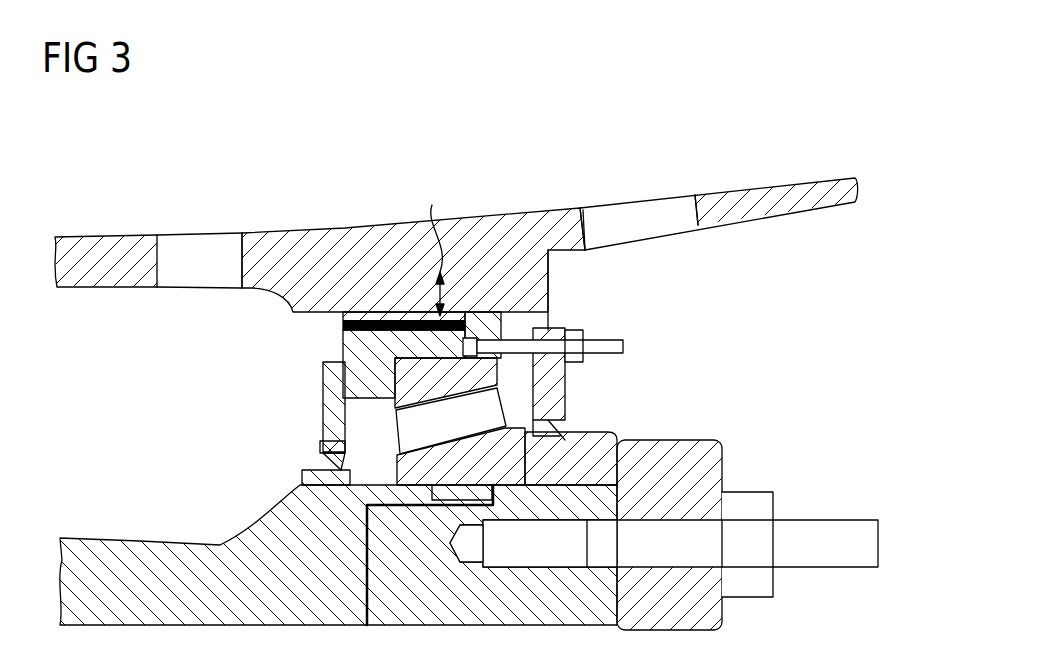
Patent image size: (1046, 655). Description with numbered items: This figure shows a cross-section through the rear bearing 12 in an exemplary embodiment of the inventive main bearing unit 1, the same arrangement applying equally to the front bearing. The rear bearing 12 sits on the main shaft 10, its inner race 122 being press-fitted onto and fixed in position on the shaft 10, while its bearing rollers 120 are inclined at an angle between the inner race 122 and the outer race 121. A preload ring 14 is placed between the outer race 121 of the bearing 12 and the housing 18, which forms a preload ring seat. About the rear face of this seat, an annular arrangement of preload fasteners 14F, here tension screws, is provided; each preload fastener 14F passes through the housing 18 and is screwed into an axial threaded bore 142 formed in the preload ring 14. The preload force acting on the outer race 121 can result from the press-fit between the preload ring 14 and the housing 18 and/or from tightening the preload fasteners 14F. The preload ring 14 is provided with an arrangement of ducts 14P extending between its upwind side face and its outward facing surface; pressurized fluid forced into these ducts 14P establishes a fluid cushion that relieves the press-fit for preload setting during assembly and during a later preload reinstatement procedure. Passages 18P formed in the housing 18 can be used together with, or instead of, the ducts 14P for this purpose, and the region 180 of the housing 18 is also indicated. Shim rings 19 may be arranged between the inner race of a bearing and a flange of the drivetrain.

The main bearing unit 1 is at (188, 150).
The main shaft 10 is at (165, 544).
The rear bearing 12 is at (518, 397).
The bearing rollers 120 is at (415, 432).
The outer race 121 is at (395, 393).
The inner race 122 is at (410, 465).
The preload ring 14 is at (352, 345).
The ducts 14P is at (380, 315).
The preload fasteners 14F is at (626, 344).
The axial threaded bore 142 is at (490, 343).
The housing 18 is at (266, 238).
The recess of beam 180 is at (187, 245).
The passages 18P is at (530, 330).
The shim rings 19 is at (610, 433).